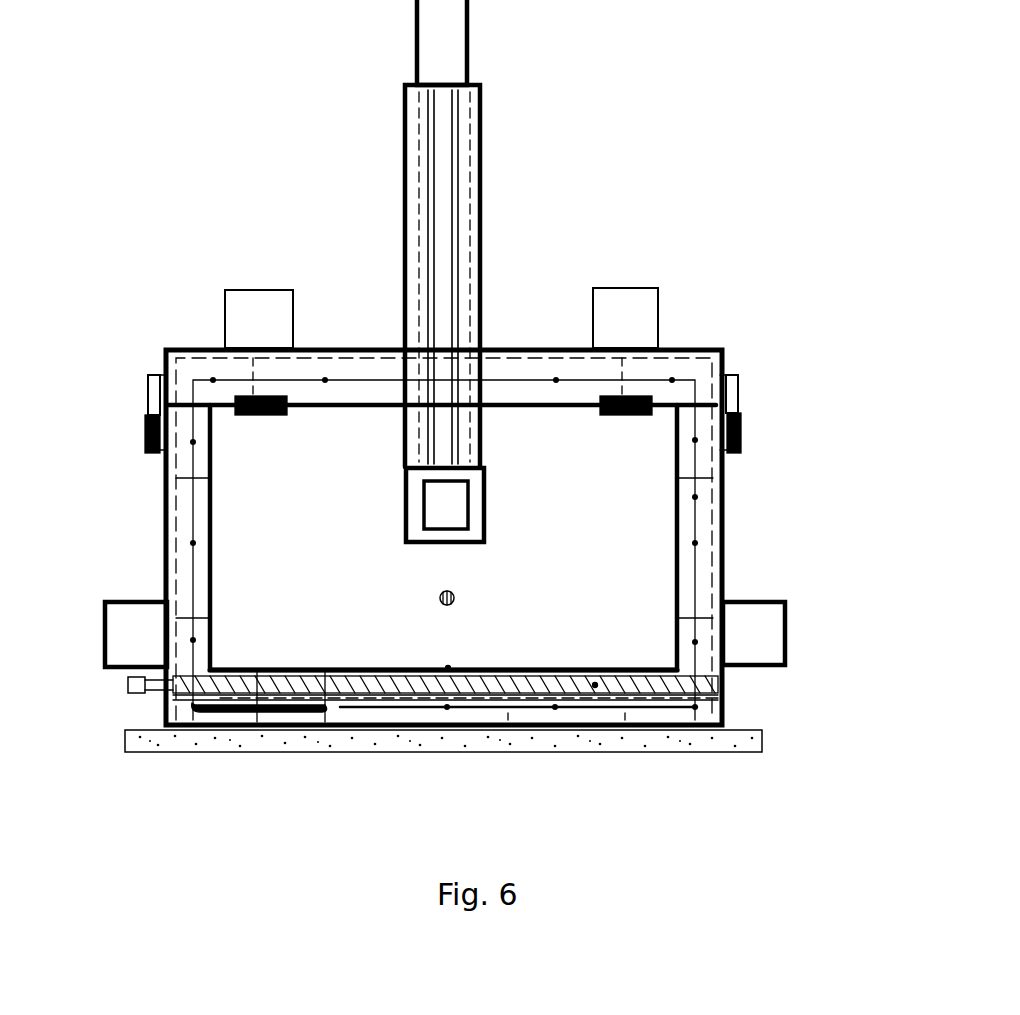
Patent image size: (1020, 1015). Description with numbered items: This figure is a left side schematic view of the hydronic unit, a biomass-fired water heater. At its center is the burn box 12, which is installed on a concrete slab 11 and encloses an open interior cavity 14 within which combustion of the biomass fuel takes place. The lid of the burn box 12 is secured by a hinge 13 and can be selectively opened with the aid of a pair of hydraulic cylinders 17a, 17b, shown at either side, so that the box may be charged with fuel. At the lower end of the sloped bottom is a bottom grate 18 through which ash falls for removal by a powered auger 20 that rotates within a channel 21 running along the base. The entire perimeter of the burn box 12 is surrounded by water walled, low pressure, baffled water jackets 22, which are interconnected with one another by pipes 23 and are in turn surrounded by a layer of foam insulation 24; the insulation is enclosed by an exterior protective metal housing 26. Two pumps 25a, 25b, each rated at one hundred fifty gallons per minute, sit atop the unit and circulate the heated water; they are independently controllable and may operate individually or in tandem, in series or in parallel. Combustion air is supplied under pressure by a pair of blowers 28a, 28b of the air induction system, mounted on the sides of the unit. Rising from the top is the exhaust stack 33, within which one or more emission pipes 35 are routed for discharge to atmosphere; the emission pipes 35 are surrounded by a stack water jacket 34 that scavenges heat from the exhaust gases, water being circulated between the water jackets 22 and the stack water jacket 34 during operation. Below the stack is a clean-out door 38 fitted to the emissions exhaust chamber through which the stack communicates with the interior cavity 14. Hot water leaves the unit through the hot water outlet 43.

The concrete slab 11 is at (762, 742).
The burn box 12 is at (305, 668).
The hinge 13 is at (258, 415).
The interior cavity 14 is at (450, 585).
The hydraulic cylinder 17a is at (147, 438).
The hydraulic cylinder 17b is at (741, 420).
The bottom grate 18 is at (448, 668).
The powered auger 20 is at (727, 702).
The channel 21 is at (727, 683).
The water jackets 22 is at (672, 357).
The pipes 23 is at (213, 380).
The foam insulation 24 is at (722, 563).
The pump 25a is at (259, 319).
The pump 25b is at (626, 318).
The exterior protective metal housing 26 is at (723, 347).
The blower 28a is at (105, 635).
The blower 28b is at (787, 630).
The exhaust stack 33 is at (417, 38).
The stack water jacket 34 is at (468, 165).
The emission pipes 35 is at (427, 122).
The clean-out door 38 is at (460, 505).
The hot water outlet 43 is at (457, 598).